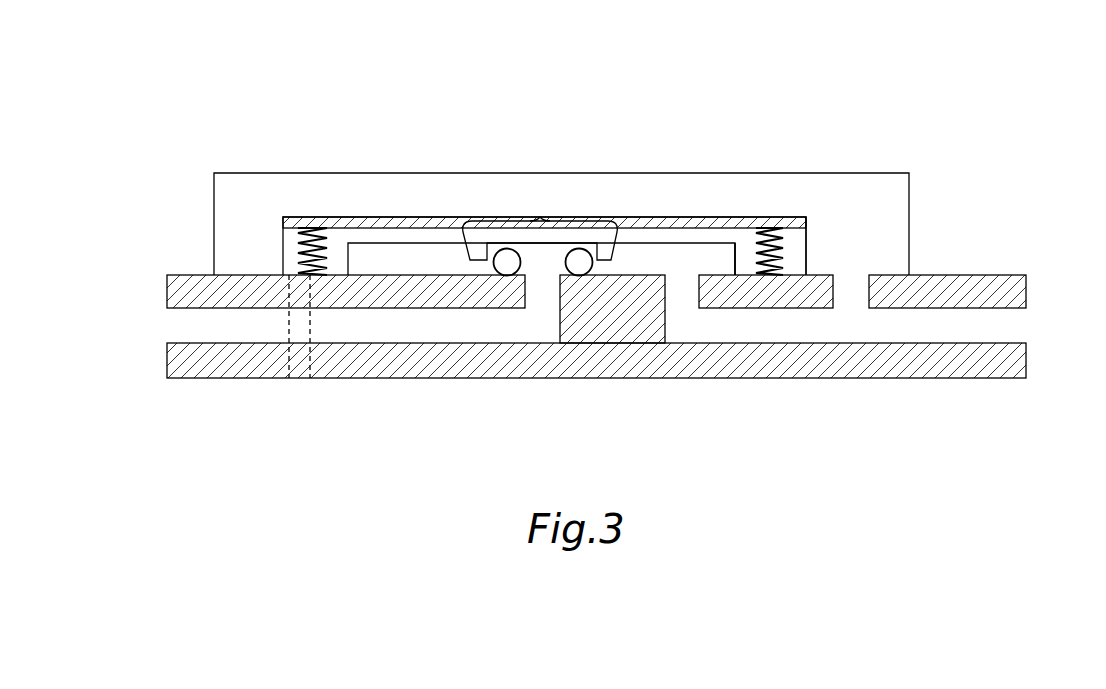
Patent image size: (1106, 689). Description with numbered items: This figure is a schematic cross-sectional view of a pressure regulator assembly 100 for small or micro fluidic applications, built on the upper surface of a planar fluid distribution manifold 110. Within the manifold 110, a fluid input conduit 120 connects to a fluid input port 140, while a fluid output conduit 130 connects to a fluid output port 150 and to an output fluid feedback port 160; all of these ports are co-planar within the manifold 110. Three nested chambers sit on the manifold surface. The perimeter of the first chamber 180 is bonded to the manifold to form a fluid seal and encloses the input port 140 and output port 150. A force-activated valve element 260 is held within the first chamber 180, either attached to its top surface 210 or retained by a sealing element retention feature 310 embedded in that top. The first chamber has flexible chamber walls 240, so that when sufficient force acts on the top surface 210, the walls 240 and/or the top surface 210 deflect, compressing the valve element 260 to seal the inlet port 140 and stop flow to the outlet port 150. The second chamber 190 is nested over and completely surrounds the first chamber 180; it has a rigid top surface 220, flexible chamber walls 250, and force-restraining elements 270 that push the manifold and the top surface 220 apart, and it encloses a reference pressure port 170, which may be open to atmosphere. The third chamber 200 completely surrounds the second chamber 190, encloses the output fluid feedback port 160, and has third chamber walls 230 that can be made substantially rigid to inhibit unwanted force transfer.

The pressure regulator assembly 100 is at (147, 77).
The fluid distribution manifold 110 is at (1035, 273).
The fluid input conduit 120 is at (402, 328).
The fluid output conduit 130 is at (817, 330).
The fluid input port 140 is at (543, 303).
The fluid output port 150 is at (685, 303).
The output fluid feedback port 160 is at (849, 303).
The reference pressure port 170 is at (306, 328).
The first chamber 180 is at (690, 264).
The second chamber 190 is at (792, 232).
The third chamber 200 is at (898, 191).
The top surface 210 is at (382, 243).
The rigid top surface 220 is at (452, 223).
The third chamber walls 230 is at (508, 172).
The flexible chamber walls 240 is at (740, 262).
The flexible chamber walls 250 is at (806, 232).
The force-activated valve element 260 is at (505, 268).
The force-restraining elements 270 is at (299, 251).
The sealing element retention feature 310 is at (540, 221).